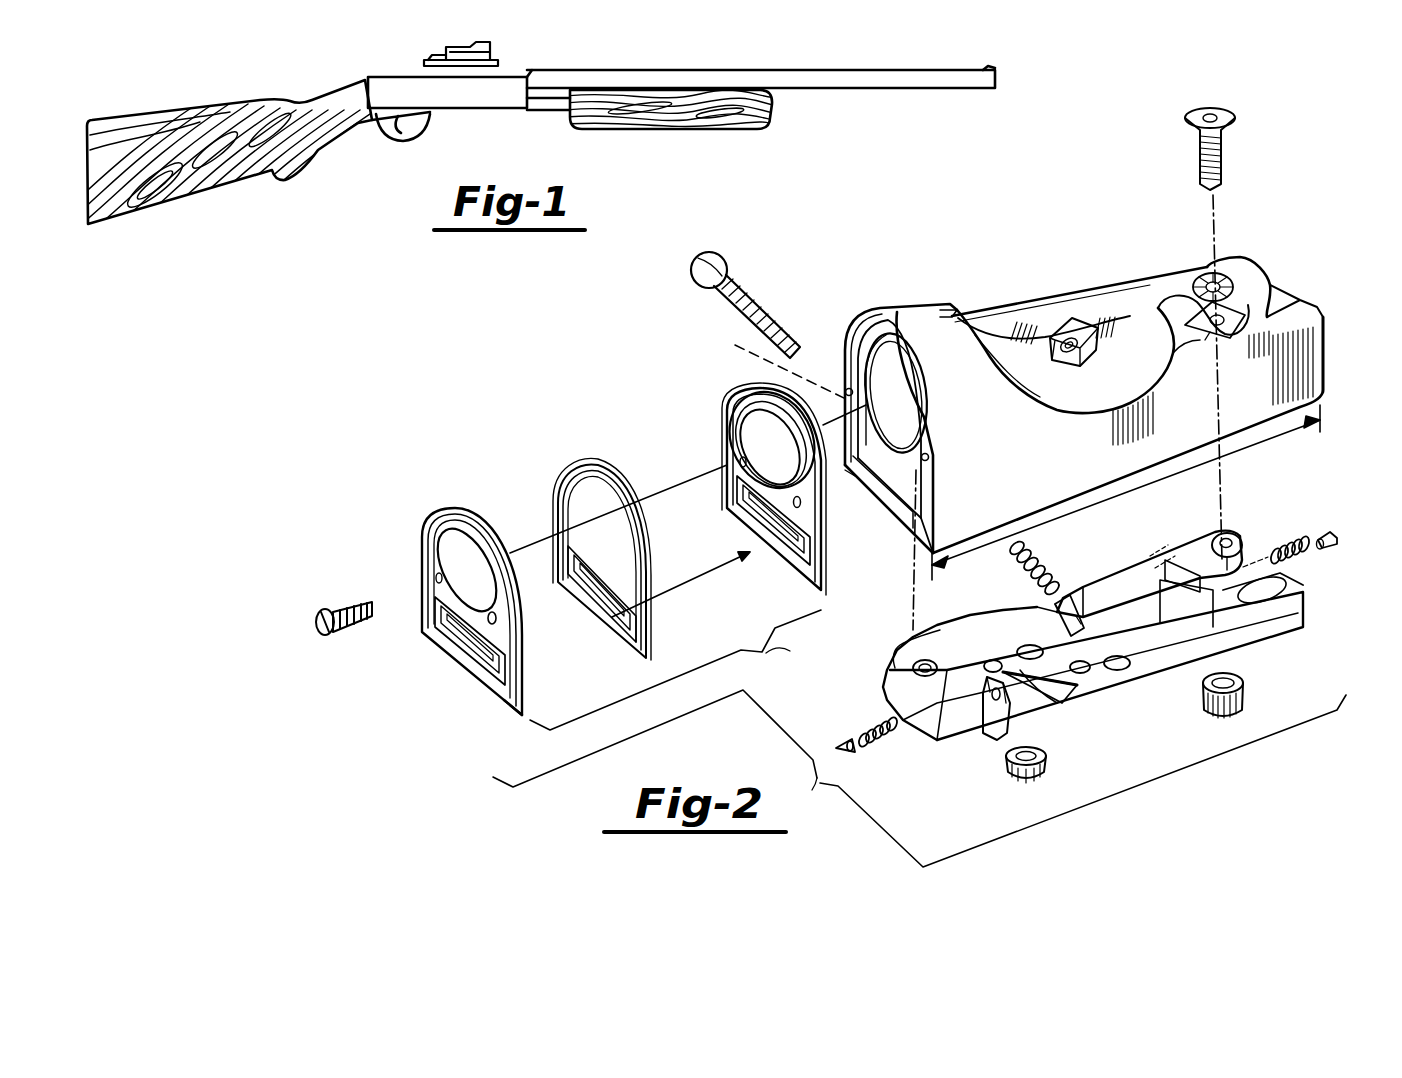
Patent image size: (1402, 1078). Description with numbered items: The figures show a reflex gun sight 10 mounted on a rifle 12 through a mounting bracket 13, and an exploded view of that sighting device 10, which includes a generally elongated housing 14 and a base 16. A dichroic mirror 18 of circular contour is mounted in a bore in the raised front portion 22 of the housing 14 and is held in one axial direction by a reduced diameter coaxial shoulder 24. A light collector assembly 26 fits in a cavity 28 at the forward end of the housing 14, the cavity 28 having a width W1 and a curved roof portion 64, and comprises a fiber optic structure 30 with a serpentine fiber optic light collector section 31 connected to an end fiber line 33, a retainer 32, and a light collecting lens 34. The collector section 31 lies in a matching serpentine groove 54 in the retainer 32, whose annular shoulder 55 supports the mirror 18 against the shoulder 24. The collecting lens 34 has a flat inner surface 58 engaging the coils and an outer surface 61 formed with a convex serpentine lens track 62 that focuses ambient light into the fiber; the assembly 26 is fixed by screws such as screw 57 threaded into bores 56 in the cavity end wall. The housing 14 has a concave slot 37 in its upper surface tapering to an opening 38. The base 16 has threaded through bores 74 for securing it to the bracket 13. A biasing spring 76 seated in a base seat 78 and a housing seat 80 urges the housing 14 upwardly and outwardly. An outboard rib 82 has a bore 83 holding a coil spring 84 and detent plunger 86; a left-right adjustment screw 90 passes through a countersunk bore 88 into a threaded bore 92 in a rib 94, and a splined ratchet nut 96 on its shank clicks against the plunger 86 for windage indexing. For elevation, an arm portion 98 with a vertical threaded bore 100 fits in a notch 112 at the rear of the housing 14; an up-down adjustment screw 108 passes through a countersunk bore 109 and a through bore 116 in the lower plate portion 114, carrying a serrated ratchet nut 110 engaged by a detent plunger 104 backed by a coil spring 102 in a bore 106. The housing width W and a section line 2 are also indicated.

In FIG. 1, the gun sight 10 is at (494, 47).
In FIG. 2, the gun sight 10 is at (815, 798).
In FIG. 1, the rifle 12 is at (662, 62).
In FIG. 1, the mounting bracket 13 is at (430, 58).
In FIG. 2, the housing 14 is at (1266, 438).
In FIG. 2, the base 16 is at (1285, 650).
In FIG. 2, the dichroic mirror 18 is at (908, 409).
In FIG. 2, the raised front portion 22 is at (903, 308).
In FIG. 2, the shoulder 24 is at (950, 302).
In FIG. 2, the light collector assembly 26 is at (784, 666).
In FIG. 2, the cavity 28 is at (888, 523).
In FIG. 2, the fiber optic structure 30 is at (575, 456).
In FIG. 2, the fiber optic light collector section 31 is at (592, 471).
In FIG. 2, the retainer 32 is at (728, 398).
In FIG. 2, the end fiber line 33 is at (693, 574).
In FIG. 2, the light collecting lens 34 is at (425, 516).
In FIG. 2, the concave slot 37 is at (1012, 348).
In FIG. 2, the opening 38 is at (1158, 308).
In FIG. 2, the groove 54 is at (795, 572).
In FIG. 2, the annular shoulder 55 is at (784, 390).
In FIG. 2, the threaded bores 56 is at (843, 387).
In FIG. 2, the screw 57 is at (350, 605).
In FIG. 2, the inner surface 58 is at (463, 525).
In FIG. 2, the outer surface 61 is at (503, 703).
In FIG. 2, the lens track 62 is at (498, 626).
In FIG. 2, the roof portion 64 is at (847, 342).
In FIG. 2, the threaded through bores 74 is at (1082, 658).
In FIG. 2, the biasing spring 76 is at (1032, 552).
In FIG. 2, the base seat 78 is at (1058, 598).
In FIG. 2, the housing seat 80 is at (1064, 320).
In FIG. 2, the outboard rib 82 is at (1050, 695).
In FIG. 2, the bore 83 is at (986, 738).
In FIG. 2, the coil spring 84 is at (878, 740).
In FIG. 2, the detent plunger 86 is at (845, 752).
In FIG. 2, the countersunk bore 88 is at (774, 359).
In FIG. 2, the left-right adjustment screw 90 is at (743, 277).
In FIG. 2, the threaded bore 92 is at (912, 672).
In FIG. 2, the rib 94 is at (922, 636).
In FIG. 2, the ratchet nut 96 is at (1048, 765).
In FIG. 2, the arm portion 98 is at (1224, 533).
In FIG. 2, the threaded bore 100 is at (1232, 536).
In FIG. 2, the coil spring 102 is at (1294, 538).
In FIG. 2, the detent plunger 104 is at (1340, 540).
In FIG. 2, the bore 106 is at (1160, 560).
In FIG. 2, the up-down adjustment screw 108 is at (1228, 142).
In FIG. 2, the countersunk bore 109 is at (1220, 272).
In FIG. 2, the serrated ratchet nut 110 is at (1245, 686).
In FIG. 2, the notch 112 is at (1242, 300).
In FIG. 2, the lower plate portion 114 is at (1210, 340).
In FIG. 2, the through bore 116 is at (1310, 333).
In FIG. 2, the width W is at (1373, 304).
In FIG. 2, the width of cavity W1 is at (852, 482).
In FIG. 2, the section line 2 is at (1126, 492).